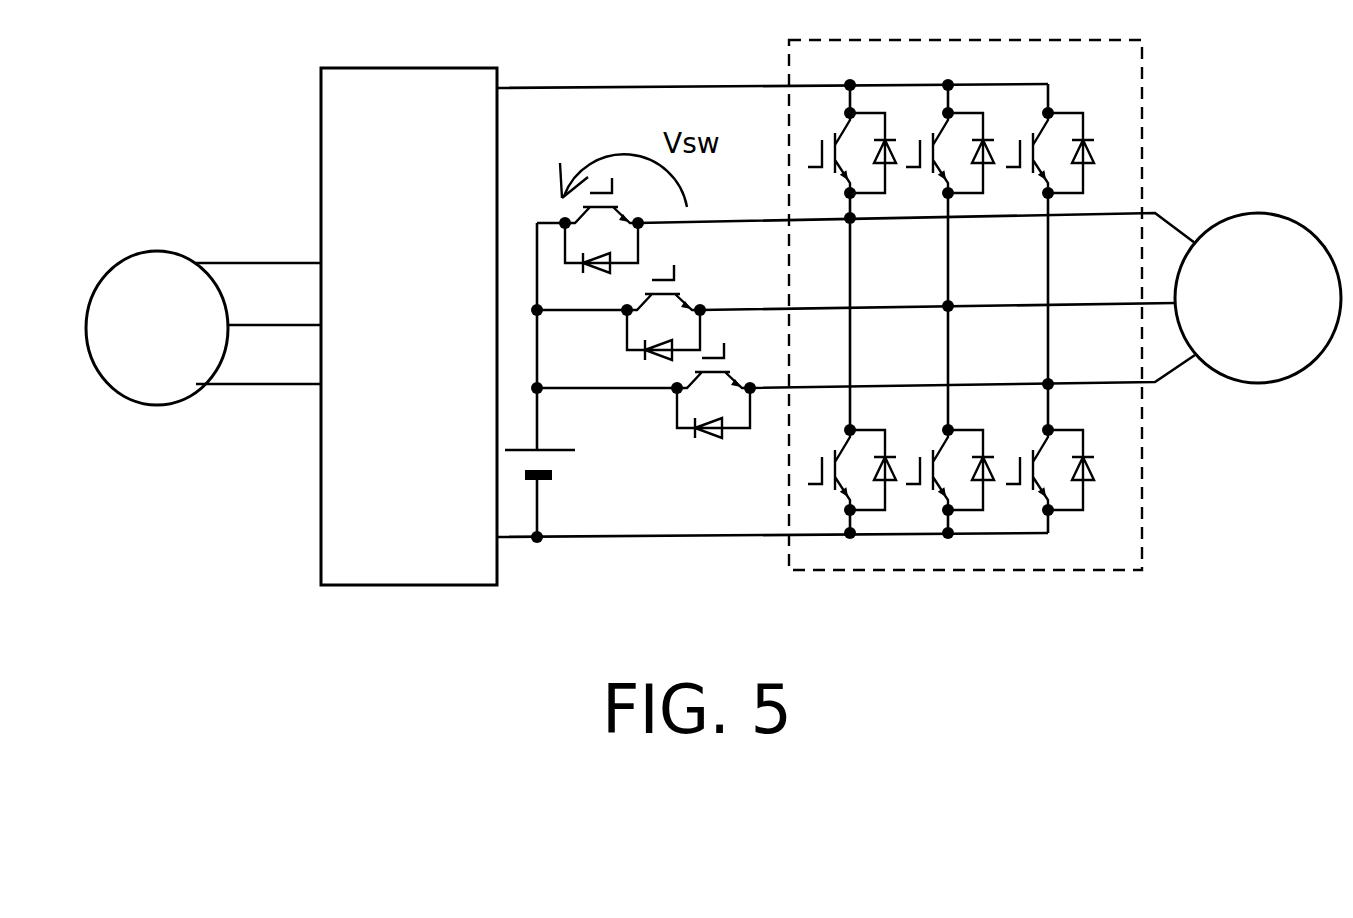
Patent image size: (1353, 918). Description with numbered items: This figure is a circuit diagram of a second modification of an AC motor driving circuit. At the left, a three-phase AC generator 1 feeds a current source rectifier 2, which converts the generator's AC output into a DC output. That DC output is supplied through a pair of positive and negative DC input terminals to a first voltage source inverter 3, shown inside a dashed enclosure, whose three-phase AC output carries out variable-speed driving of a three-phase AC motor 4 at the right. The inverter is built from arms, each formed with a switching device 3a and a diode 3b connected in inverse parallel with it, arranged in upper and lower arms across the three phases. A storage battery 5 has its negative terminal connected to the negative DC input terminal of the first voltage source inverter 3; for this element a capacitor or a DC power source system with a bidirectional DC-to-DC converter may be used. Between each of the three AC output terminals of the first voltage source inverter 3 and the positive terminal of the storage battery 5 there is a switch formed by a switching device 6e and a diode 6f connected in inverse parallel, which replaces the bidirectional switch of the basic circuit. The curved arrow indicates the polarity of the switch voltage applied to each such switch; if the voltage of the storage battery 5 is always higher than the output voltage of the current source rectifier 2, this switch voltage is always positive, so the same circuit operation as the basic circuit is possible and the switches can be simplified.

The three-phase AC generator 1 is at (157, 328).
The current source rectifier 2 is at (409, 326).
The first voltage source inverter 3 is at (965, 305).
The switching device 3a is at (923, 305).
The diode 3b is at (989, 329).
The three-phase AC motor 4 is at (1258, 298).
The storage battery 5 is at (550, 383).
The switching device 6e is at (663, 286).
The diode 6f is at (653, 360).